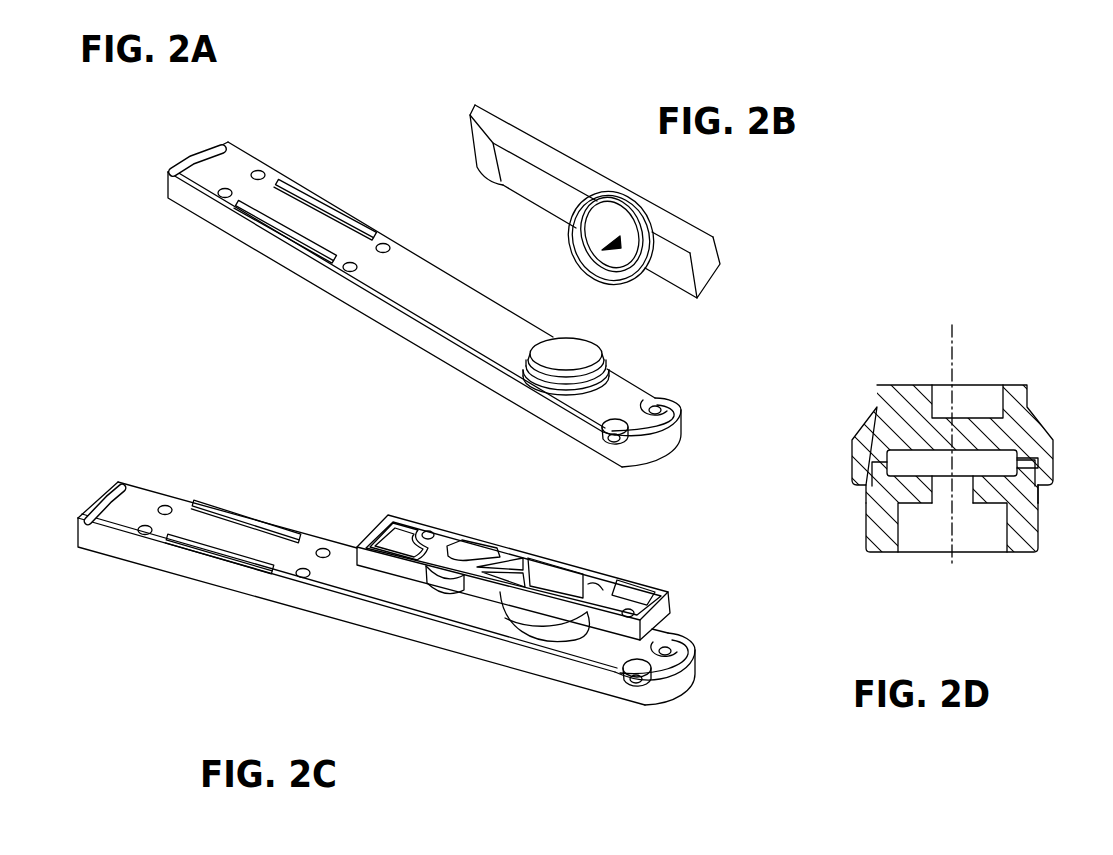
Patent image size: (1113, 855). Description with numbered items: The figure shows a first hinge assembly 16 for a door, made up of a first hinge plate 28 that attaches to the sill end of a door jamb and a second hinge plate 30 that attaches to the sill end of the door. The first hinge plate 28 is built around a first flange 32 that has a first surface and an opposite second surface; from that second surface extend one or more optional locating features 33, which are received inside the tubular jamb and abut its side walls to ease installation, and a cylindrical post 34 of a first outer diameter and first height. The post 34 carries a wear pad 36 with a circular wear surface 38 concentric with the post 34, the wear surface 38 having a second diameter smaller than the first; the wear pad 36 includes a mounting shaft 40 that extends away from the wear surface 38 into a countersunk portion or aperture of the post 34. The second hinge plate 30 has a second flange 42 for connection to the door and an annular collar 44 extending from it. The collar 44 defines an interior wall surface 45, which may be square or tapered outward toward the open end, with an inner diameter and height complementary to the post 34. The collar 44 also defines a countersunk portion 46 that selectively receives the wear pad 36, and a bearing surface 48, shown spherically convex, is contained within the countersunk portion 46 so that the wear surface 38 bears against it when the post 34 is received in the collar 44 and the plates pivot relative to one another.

In FIG. 2B, the first hinge assembly 16 is at (811, 233).
In FIG. 2A, the first hinge plate 28 is at (402, 290).
In FIG. 2C, the first hinge plate 28 is at (386, 557).
In FIG. 2B, the second hinge plate 30 is at (595, 181).
In FIG. 2C, the second hinge plate 30 is at (533, 562).
In FIG. 2D, the second hinge plate 30 is at (947, 429).
In FIG. 2A, the first flange 32 is at (468, 322).
In FIG. 2C, the first flange 32 is at (268, 556).
In FIG. 2D, the first flange 32 is at (1038, 518).
In FIG. 2A, the locating features 33 is at (197, 160).
In FIG. 2C, the locating features 33 is at (123, 492).
In FIG. 2A, the cylindrical post 34 is at (602, 349).
In FIG. 2D, the cylindrical post 34 is at (913, 505).
In FIG. 2A, the wear pad 36 is at (570, 343).
In FIG. 2D, the wear pad 36 is at (937, 482).
In FIG. 2A, the wear surface 38 is at (580, 365).
In FIG. 2D, the wear surface 38 is at (899, 447).
In FIG. 2D, the mounting shaft 40 is at (980, 505).
In FIG. 2B, the second flange 42 is at (565, 204).
In FIG. 2B, the annular collar 44 is at (590, 259).
In FIG. 2D, the interior wall surface 45 is at (1027, 485).
In FIG. 2D, the countersunk portion 46 is at (1024, 506).
In FIG. 2B, the bearing surface 48 is at (586, 250).